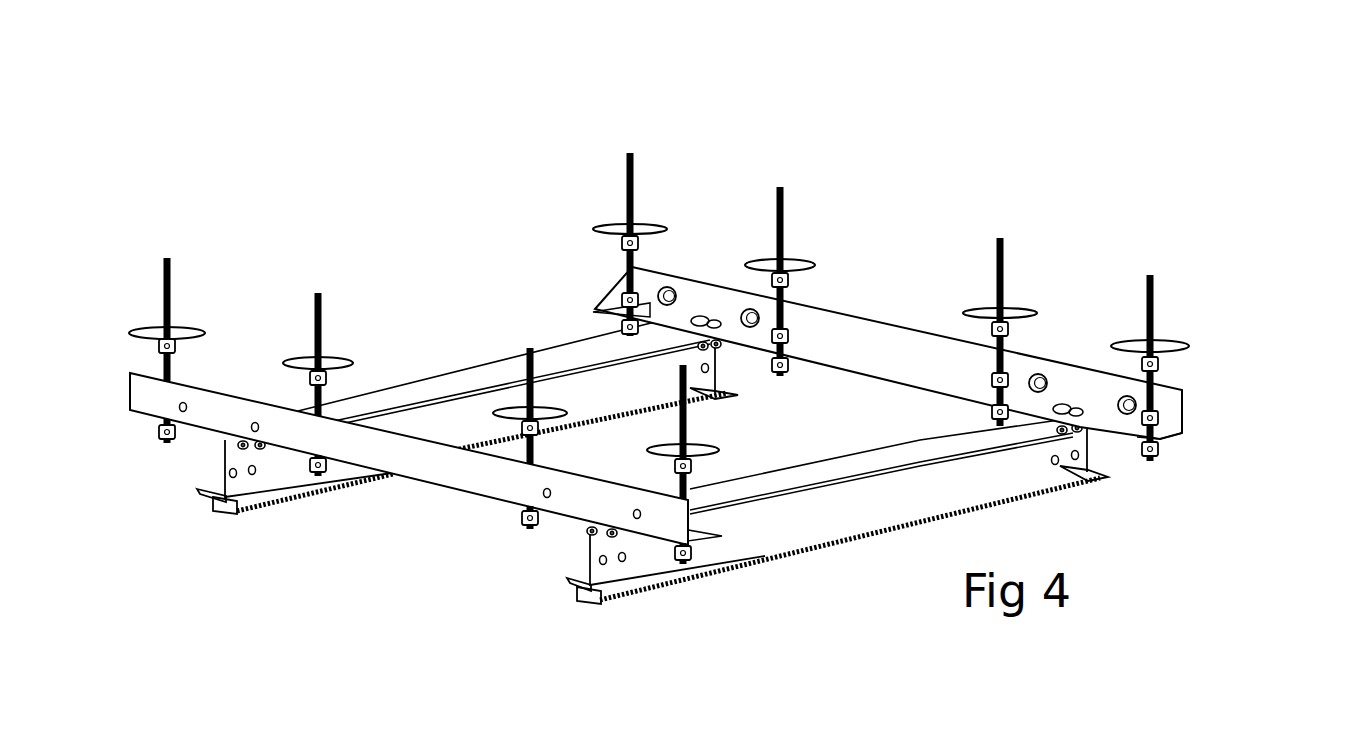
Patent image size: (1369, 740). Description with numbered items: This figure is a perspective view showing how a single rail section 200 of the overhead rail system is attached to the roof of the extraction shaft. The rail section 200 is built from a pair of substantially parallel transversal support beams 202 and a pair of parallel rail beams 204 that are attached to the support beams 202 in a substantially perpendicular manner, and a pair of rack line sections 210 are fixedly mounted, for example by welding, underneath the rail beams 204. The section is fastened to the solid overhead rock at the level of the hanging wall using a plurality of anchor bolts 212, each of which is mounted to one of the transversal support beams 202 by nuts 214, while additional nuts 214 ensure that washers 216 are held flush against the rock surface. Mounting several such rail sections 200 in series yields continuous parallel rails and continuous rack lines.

The rail section 200 is at (286, 127).
The transversal support beam 202 is at (656, 355).
The rail beam 204 is at (668, 425).
The rack line section 210 is at (652, 494).
The anchor bolt 212 is at (691, 358).
The nut 214 is at (757, 398).
The washer 216 is at (713, 340).